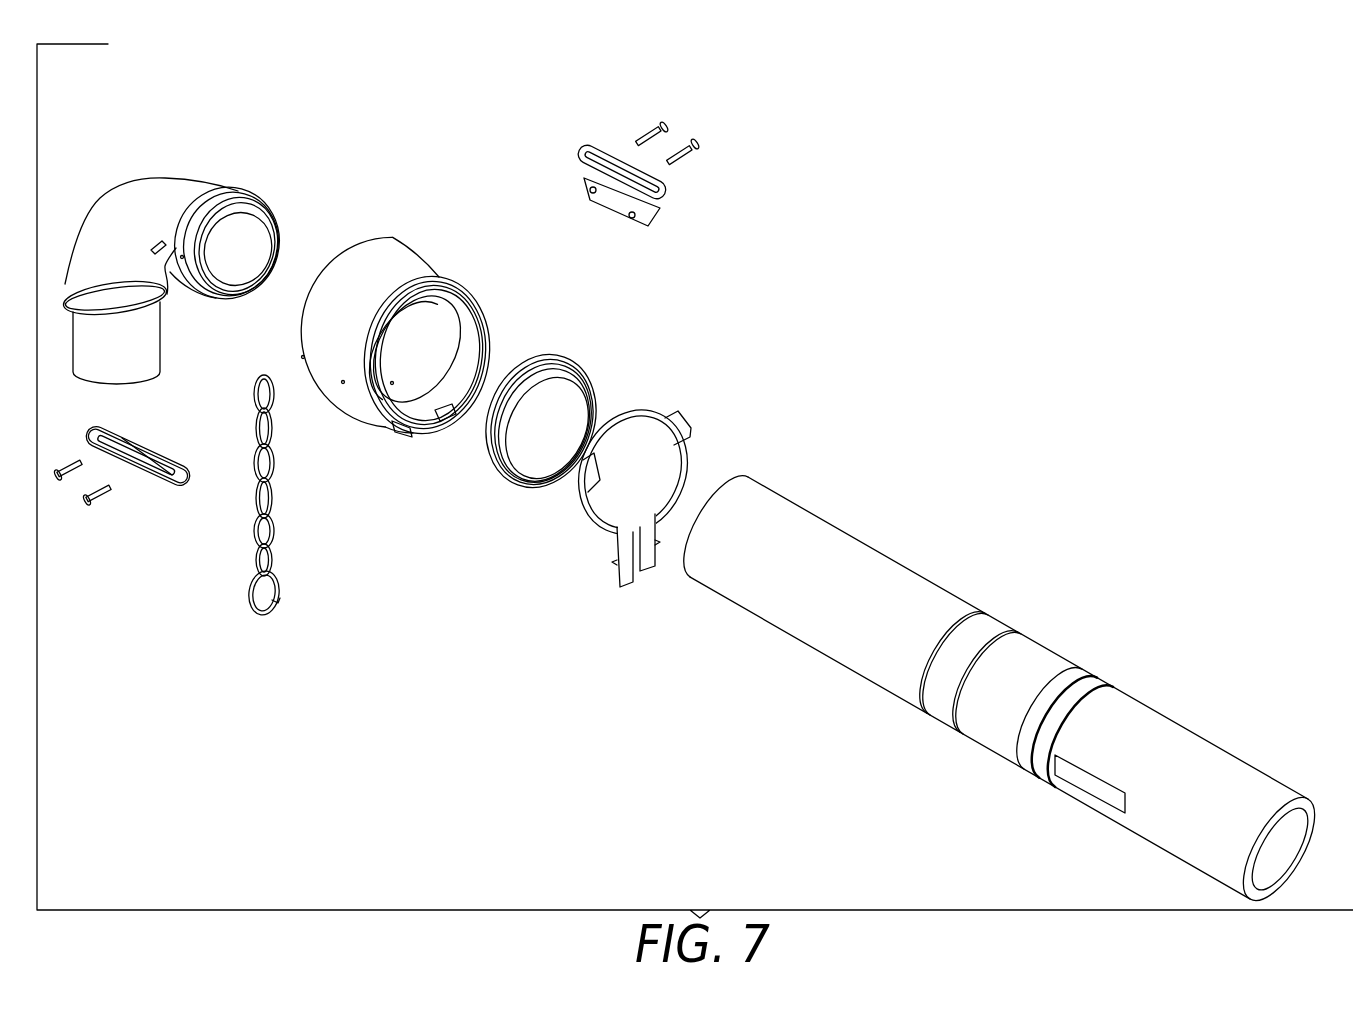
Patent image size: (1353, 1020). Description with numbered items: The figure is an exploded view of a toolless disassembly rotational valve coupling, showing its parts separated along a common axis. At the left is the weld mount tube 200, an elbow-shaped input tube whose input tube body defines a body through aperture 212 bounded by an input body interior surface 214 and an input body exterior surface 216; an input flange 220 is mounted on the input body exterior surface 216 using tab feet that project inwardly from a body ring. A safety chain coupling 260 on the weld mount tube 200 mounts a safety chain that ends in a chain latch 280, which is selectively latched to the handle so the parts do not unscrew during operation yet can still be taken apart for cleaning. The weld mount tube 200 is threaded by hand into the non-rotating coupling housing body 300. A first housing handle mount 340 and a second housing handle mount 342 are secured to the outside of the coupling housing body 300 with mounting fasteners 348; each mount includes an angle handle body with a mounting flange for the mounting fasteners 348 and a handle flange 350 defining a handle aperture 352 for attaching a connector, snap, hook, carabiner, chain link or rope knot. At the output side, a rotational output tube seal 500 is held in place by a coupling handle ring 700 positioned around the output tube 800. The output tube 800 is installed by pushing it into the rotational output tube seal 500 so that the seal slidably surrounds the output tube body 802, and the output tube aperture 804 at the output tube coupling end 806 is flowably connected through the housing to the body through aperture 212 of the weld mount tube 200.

The weld mount tube 200 is at (197, 250).
The body through aperture 212 is at (241, 229).
The input body interior surface 214 is at (272, 250).
The input body exterior surface 216 is at (100, 199).
The input flange 220 is at (70, 282).
The safety chain coupling 260 is at (296, 507).
The chain latch 280 is at (281, 604).
The coupling housing body 300 is at (411, 245).
The first housing handle mount 340 is at (130, 475).
The second housing handle mount 342 is at (667, 198).
The mounting fasteners 348 is at (87, 507).
The handle flange 350 is at (90, 437).
The handle aperture 352 is at (87, 448).
The rotational output tube seal 500 is at (581, 360).
The coupling handle ring 700 is at (681, 410).
The output tube 800 is at (1015, 661).
The output tube body 802 is at (888, 557).
The output tube aperture 804 is at (1313, 817).
The output tube coupling end 806 is at (748, 477).